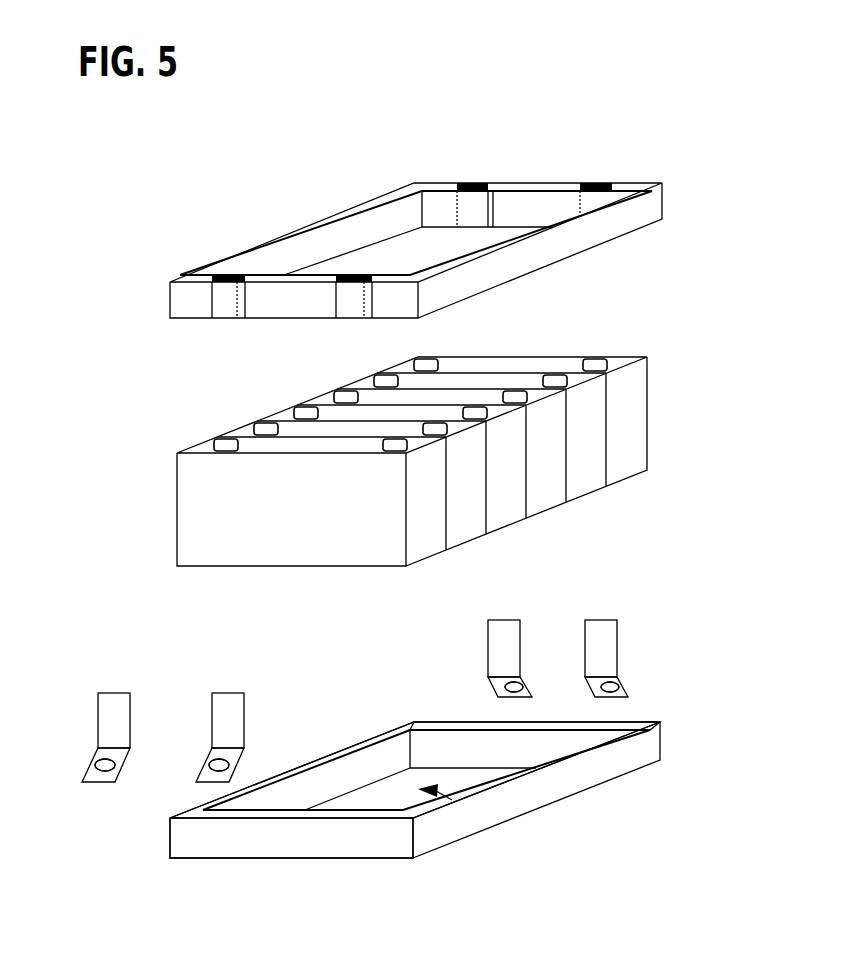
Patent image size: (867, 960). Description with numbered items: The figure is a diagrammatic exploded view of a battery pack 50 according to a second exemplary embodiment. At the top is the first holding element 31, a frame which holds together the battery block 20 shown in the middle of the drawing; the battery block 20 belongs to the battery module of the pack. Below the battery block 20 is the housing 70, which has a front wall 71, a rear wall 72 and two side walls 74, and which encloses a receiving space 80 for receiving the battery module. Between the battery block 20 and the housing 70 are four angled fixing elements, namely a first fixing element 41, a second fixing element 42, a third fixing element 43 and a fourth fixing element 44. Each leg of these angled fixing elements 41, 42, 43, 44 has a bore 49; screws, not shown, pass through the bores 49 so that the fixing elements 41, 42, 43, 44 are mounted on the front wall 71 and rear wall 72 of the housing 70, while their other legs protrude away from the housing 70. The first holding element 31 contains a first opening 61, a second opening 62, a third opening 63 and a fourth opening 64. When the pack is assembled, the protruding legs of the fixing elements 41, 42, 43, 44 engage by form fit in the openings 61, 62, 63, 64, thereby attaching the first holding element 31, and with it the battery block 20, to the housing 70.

The battery pack 50 is at (696, 140).
The first holding element 31 is at (632, 218).
The first opening 61 is at (230, 282).
The second opening 62 is at (365, 275).
The third opening 63 is at (478, 183).
The fourth opening 64 is at (600, 183).
The battery block 20 is at (627, 432).
The first fixing element 41 is at (115, 705).
The second fixing element 42 is at (233, 705).
The third fixing element 43 is at (500, 630).
The fourth fixing element 44 is at (596, 630).
The bore 49 is at (97, 760).
The housing 70 is at (665, 742).
The front wall 71 is at (307, 843).
The rear wall 72 is at (428, 740).
The side wall 74 is at (320, 785).
The receiving space 80 is at (450, 790).